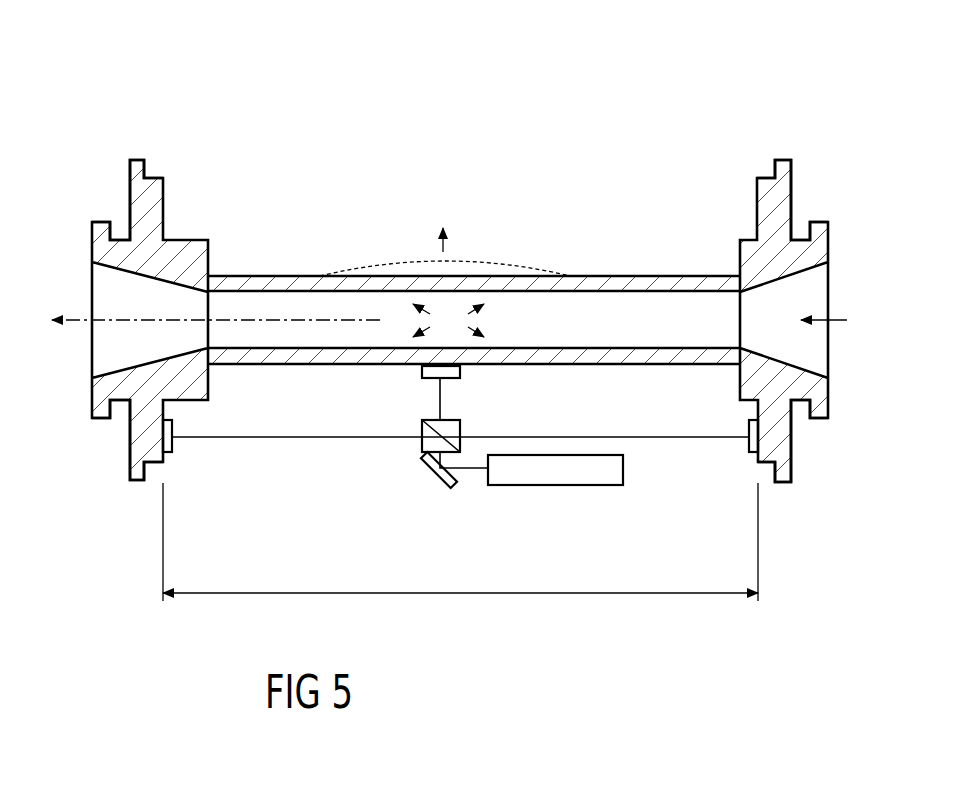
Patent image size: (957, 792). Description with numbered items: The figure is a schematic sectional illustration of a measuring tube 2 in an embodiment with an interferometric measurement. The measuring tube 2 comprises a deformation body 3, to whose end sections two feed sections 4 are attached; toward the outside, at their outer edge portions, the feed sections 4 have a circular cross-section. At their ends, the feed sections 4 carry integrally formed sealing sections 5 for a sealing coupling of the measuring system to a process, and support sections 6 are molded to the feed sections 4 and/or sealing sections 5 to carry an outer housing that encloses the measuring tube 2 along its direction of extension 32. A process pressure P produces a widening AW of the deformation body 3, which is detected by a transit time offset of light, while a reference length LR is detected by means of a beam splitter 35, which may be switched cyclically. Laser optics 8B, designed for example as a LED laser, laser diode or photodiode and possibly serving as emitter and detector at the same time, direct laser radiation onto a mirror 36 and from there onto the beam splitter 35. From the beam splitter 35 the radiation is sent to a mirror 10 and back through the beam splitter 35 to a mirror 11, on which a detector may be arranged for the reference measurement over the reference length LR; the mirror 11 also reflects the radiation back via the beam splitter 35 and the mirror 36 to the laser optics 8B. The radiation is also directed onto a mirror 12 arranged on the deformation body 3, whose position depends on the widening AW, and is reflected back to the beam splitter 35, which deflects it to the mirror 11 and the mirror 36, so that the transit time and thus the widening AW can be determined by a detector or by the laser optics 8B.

The measuring tube 2 is at (630, 116).
The deformation body 3 is at (630, 276).
The feed section 4 is at (94, 371).
The sealing section 5 is at (98, 413).
The support section 6 is at (148, 187).
The direction of extension 32 is at (80, 317).
The mirror 10 is at (173, 438).
The mirror 11 is at (747, 440).
The mirror 12 is at (428, 374).
The beam splitter 35 is at (422, 453).
The mirror 36 is at (445, 488).
The laser optics 8B is at (582, 468).